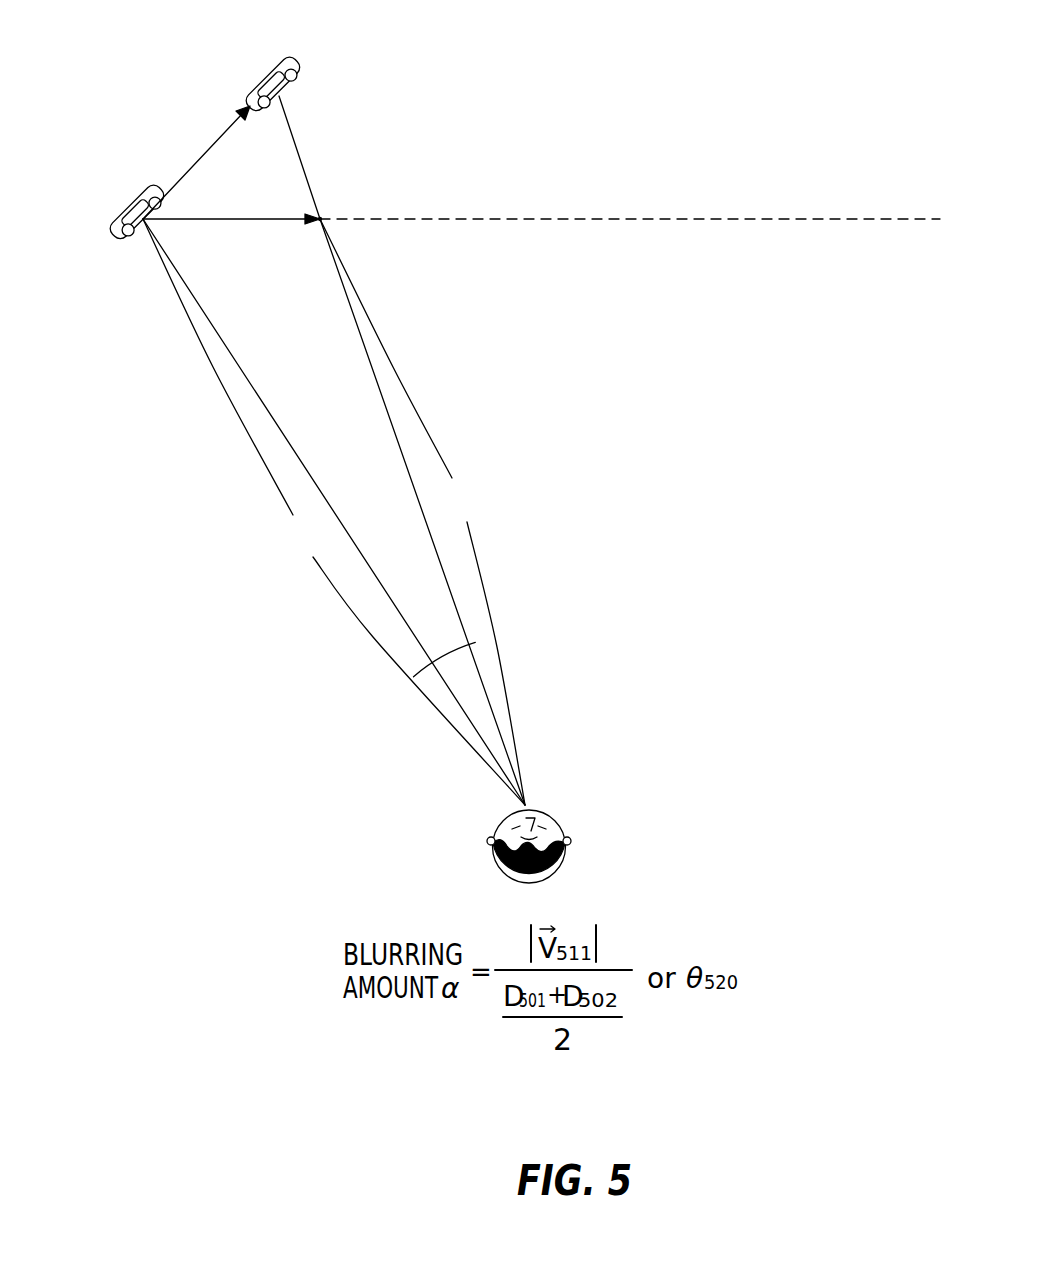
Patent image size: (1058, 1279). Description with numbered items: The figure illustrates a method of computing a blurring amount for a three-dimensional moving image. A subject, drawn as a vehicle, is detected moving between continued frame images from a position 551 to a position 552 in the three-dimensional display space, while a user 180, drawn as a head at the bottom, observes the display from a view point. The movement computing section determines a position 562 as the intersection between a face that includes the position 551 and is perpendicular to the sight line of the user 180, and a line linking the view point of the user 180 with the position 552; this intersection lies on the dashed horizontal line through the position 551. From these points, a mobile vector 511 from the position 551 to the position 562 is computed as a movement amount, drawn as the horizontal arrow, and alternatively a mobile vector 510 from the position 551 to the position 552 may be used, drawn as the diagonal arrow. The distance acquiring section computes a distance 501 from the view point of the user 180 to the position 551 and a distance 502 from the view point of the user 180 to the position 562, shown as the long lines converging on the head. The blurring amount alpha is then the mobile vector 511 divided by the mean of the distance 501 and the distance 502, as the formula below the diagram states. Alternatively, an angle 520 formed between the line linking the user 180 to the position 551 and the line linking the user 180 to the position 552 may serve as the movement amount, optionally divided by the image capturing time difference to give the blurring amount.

The position 551 is at (112, 241).
The position 552 is at (275, 63).
The position 562 is at (320, 219).
The mobile vector 510 is at (197, 160).
The mobile vector 511 is at (217, 182).
The distance 501 is at (334, 512).
The distance 502 is at (422, 512).
The angle 520 is at (411, 679).
The user 180 is at (566, 842).